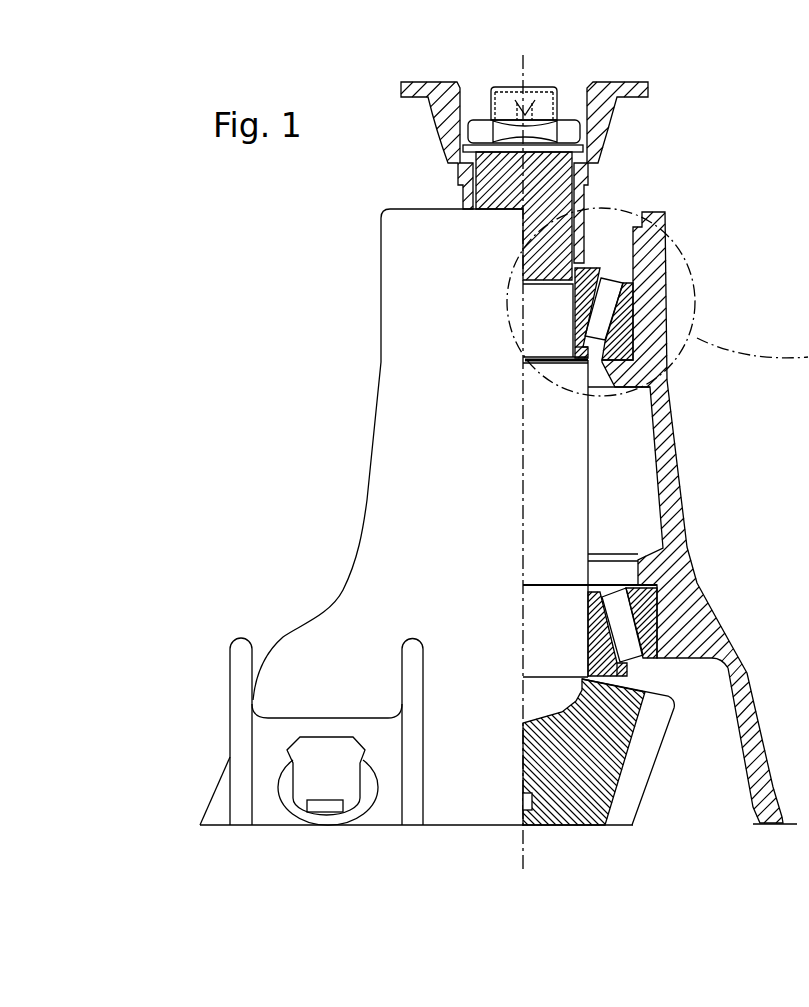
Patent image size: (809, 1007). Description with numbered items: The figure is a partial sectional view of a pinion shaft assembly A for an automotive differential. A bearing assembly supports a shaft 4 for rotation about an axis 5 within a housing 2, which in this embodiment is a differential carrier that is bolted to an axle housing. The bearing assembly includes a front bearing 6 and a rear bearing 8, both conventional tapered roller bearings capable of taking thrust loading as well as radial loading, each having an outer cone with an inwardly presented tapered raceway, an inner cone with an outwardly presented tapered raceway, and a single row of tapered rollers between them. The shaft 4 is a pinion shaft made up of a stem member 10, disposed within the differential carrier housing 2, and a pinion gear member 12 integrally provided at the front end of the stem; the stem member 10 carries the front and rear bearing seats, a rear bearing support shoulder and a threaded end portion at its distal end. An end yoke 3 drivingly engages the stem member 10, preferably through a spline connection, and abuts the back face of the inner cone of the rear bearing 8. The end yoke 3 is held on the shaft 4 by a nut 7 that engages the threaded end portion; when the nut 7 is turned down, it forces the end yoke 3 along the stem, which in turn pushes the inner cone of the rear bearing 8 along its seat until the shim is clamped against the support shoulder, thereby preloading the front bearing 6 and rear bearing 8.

The housing 2 is at (665, 270).
The end yoke 3 is at (610, 127).
The shaft 4 is at (592, 510).
The axis 5 is at (526, 67).
The front bearing 6 is at (645, 665).
The nut 7 is at (488, 160).
The rear bearing 8 is at (606, 242).
The stem member 10 is at (562, 486).
The pinion gear member 12 is at (640, 792).
The shaft assembly A is at (757, 191).